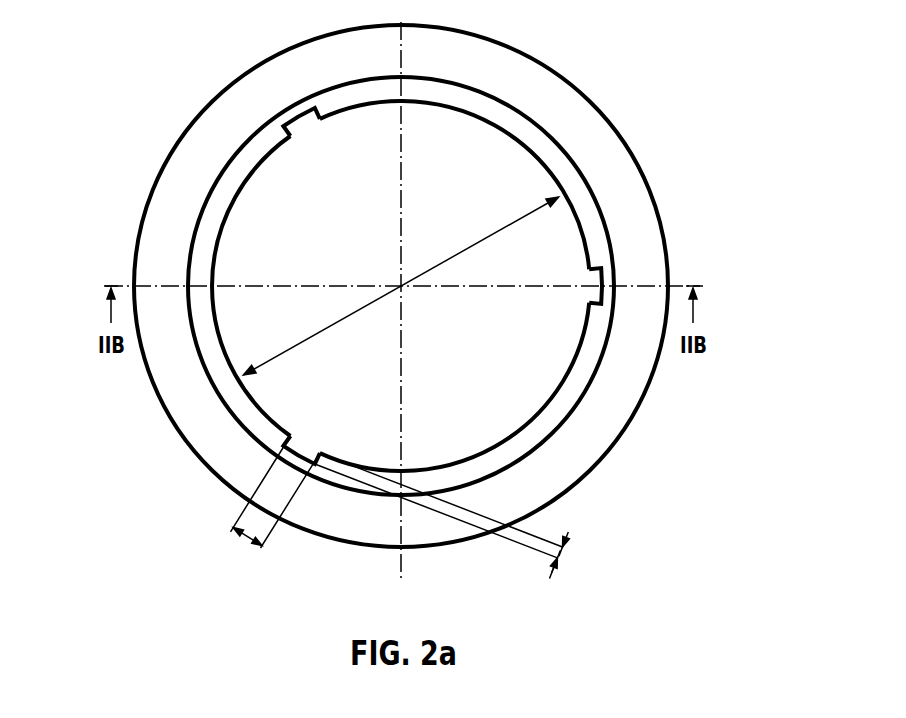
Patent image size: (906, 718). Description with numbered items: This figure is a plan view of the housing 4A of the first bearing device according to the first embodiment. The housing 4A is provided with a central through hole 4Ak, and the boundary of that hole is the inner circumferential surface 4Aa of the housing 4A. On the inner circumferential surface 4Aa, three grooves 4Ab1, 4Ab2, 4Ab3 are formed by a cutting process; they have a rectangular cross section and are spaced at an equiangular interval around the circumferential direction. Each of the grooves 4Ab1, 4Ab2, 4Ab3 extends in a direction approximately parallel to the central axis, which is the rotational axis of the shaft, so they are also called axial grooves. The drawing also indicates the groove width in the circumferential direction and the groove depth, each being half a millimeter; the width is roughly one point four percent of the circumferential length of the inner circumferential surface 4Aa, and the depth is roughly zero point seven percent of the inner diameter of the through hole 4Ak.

The housing 4A is at (485, 60).
The through hole 4Ak is at (455, 180).
The inner circumferential surface 4Aa is at (530, 417).
The groove 4Ab1 is at (315, 448).
The groove 4Ab2 is at (305, 127).
The groove 4Ab3 is at (597, 288).